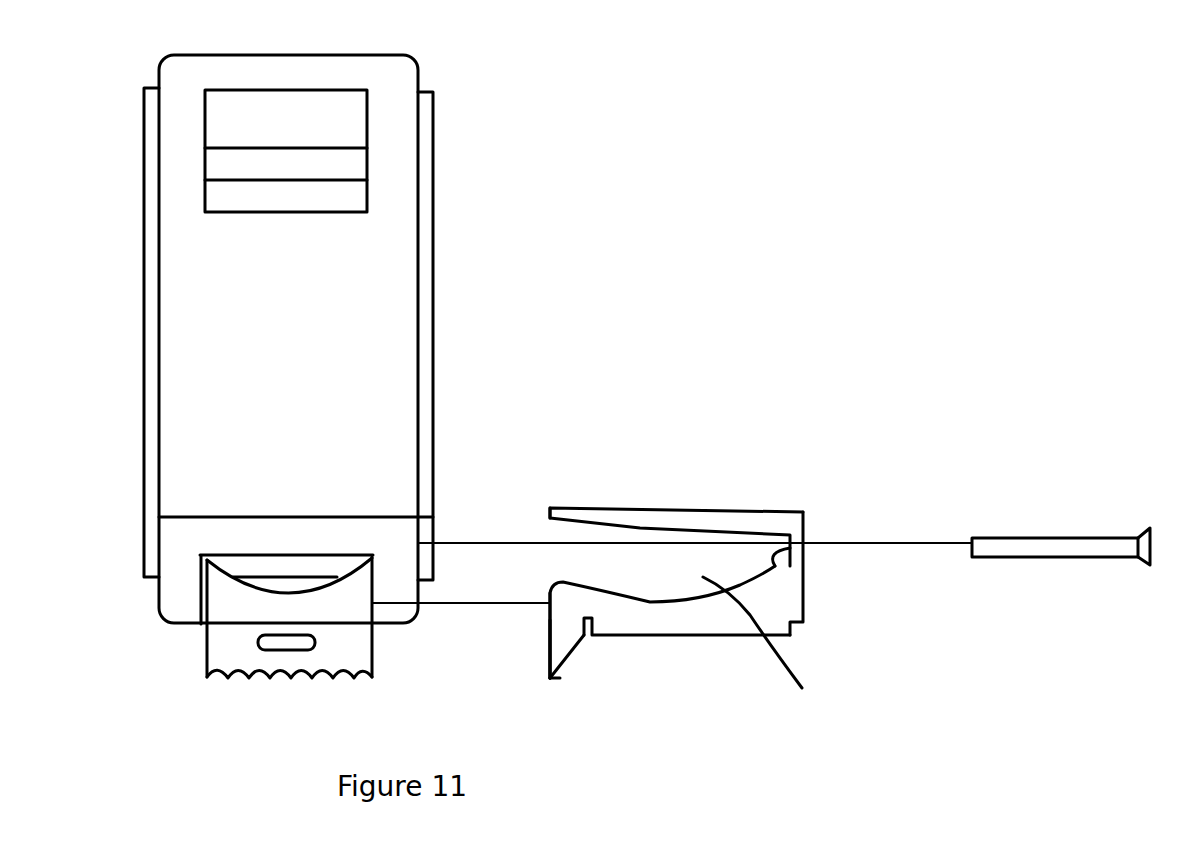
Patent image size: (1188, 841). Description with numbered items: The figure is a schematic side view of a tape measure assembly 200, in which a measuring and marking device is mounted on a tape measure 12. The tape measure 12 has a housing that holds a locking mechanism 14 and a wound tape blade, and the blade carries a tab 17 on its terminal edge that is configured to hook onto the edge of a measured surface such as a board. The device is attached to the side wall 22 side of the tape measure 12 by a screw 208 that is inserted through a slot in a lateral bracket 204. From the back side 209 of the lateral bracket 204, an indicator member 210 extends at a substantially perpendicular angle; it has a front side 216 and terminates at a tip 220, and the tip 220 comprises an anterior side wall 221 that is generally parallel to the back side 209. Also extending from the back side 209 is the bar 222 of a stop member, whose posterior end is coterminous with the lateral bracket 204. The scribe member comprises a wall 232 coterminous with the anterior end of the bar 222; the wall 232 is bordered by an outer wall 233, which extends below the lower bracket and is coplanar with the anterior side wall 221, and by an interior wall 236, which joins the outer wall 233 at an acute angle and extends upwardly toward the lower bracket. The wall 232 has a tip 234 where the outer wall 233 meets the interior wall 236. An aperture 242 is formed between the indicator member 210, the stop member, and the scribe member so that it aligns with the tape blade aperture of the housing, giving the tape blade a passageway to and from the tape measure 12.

The tape measure 12 is at (460, 158).
The locking mechanism 14 is at (343, 123).
The tab 17 is at (220, 647).
The side wall 22 is at (418, 460).
The tape measure assembly 200 is at (768, 192).
The lateral bracket 204 is at (805, 607).
The screw 208 is at (1038, 540).
The back side of lateral bracket 209 is at (803, 562).
The indicator member 210 is at (660, 505).
The front side 216 is at (732, 517).
The tip 220 is at (553, 503).
The anterior side wall 221 is at (548, 518).
The bar 222 is at (708, 618).
The wall 232 is at (550, 621).
The outer wall 233 is at (548, 636).
The tip 234 is at (550, 676).
The interior wall 236 is at (578, 652).
The aperture 242 is at (785, 644).